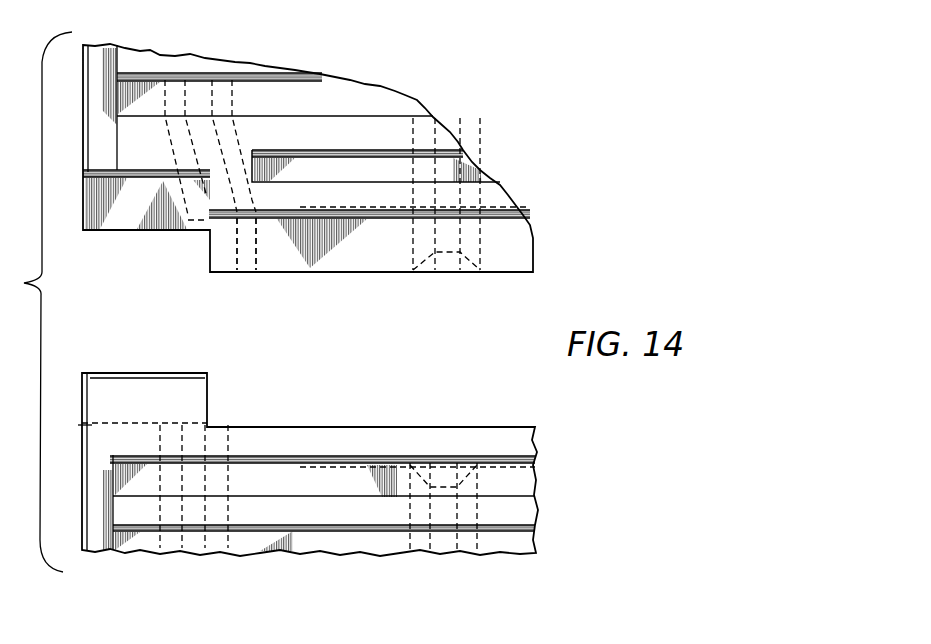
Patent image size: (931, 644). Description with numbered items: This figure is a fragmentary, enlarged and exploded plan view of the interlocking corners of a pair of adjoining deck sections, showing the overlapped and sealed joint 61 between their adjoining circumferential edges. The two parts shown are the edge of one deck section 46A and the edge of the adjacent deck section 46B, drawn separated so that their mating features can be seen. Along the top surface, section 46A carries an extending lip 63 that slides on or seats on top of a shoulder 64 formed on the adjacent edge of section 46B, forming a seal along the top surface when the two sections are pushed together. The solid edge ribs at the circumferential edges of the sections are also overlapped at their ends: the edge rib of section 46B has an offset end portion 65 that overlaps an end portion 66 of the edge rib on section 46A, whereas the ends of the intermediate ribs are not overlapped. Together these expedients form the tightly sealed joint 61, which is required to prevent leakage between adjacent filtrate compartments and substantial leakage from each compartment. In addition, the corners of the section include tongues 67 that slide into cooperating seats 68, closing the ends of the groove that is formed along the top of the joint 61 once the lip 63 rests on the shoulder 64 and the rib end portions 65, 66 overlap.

The joint 61 is at (426, 358).
The deck section 46A is at (517, 547).
The deck section 46B is at (393, 105).
The lip 63 is at (348, 437).
The shoulder 64 is at (398, 258).
The offset end portion 65 is at (258, 255).
The end portion 66 is at (207, 438).
The tongues 67 is at (197, 374).
The seats 68 is at (153, 220).